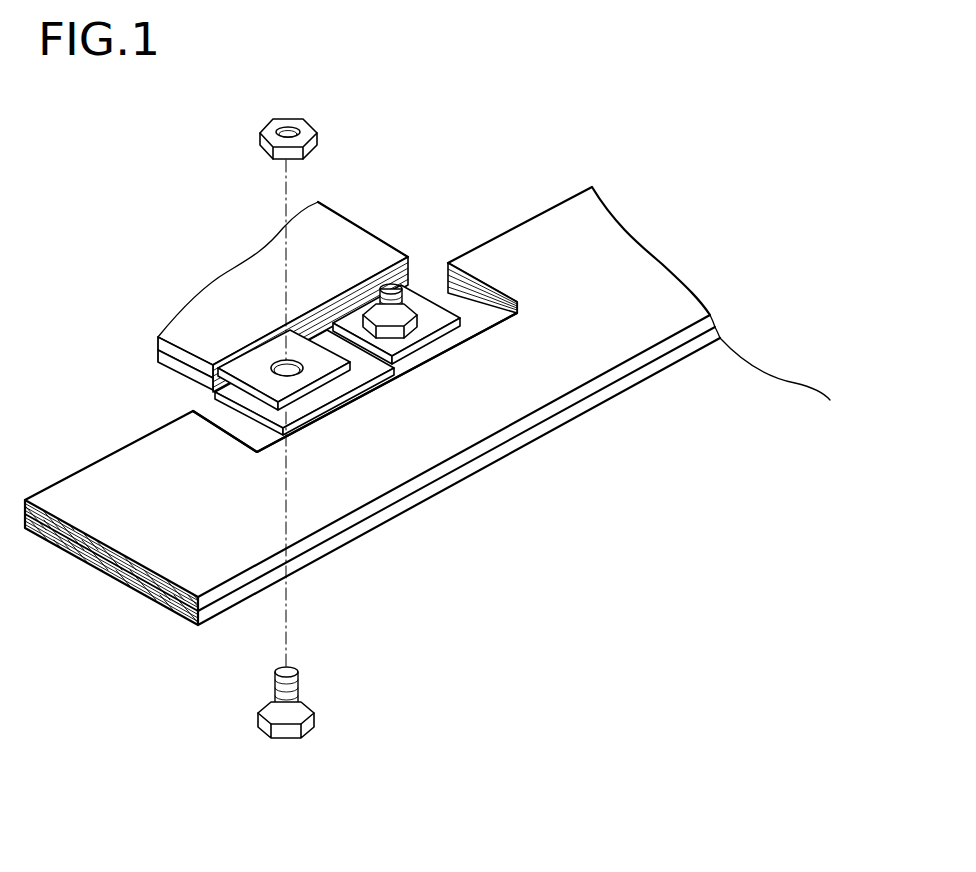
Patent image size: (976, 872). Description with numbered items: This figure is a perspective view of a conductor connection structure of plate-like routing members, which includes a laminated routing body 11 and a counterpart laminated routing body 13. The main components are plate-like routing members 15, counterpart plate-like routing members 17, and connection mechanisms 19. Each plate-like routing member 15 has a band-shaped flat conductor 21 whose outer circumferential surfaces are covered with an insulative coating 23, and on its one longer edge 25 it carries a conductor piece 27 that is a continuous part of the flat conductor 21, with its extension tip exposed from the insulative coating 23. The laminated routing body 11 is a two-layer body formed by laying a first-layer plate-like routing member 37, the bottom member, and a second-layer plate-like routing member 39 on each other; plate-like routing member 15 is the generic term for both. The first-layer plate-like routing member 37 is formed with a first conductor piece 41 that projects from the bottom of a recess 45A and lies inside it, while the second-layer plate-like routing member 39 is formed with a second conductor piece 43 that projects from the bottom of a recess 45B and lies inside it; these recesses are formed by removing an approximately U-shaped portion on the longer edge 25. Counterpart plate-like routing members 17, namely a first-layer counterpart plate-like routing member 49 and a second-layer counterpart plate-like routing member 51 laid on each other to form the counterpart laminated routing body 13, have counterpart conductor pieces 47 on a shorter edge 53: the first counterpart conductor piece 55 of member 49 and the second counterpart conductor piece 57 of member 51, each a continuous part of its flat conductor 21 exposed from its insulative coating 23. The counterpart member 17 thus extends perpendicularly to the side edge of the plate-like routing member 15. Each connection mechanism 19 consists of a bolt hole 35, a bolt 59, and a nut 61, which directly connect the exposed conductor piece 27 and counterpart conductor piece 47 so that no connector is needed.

The laminated routing body 11 is at (436, 406).
The counterpart laminated routing body 13 is at (254, 237).
The plate-like routing member 15 is at (427, 406).
The counterpart plate-like routing member 17 is at (254, 237).
The connection mechanism 19 is at (460, 258).
The flat conductor 21 is at (113, 577).
The insulative coating 23 is at (206, 320).
The longer edge 25 is at (582, 184).
The conductor piece 27 is at (358, 473).
The bolt hole 35 is at (281, 360).
The first-layer plate-like routing member 37 is at (660, 373).
The second-layer plate-like routing member 39 is at (688, 343).
The first conductor piece 41 is at (430, 345).
The second conductor piece 43 is at (333, 402).
The recess 45A is at (333, 500).
The recess 45B is at (272, 431).
The counterpart conductor piece 47 is at (327, 237).
The first-layer counterpart plate-like routing member 49 is at (160, 370).
The second-layer counterpart plate-like routing member 51 is at (148, 338).
The shorter edge 53 is at (242, 313).
The first counterpart conductor piece 55 is at (350, 315).
The second counterpart conductor piece 57 is at (301, 340).
The bolt 59 is at (394, 372).
The nut 61 is at (284, 117).